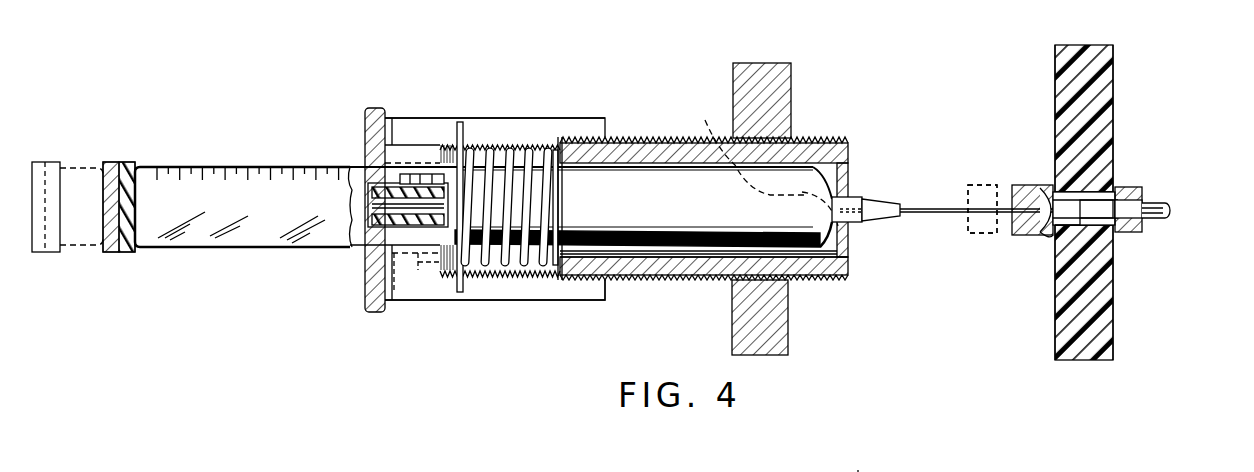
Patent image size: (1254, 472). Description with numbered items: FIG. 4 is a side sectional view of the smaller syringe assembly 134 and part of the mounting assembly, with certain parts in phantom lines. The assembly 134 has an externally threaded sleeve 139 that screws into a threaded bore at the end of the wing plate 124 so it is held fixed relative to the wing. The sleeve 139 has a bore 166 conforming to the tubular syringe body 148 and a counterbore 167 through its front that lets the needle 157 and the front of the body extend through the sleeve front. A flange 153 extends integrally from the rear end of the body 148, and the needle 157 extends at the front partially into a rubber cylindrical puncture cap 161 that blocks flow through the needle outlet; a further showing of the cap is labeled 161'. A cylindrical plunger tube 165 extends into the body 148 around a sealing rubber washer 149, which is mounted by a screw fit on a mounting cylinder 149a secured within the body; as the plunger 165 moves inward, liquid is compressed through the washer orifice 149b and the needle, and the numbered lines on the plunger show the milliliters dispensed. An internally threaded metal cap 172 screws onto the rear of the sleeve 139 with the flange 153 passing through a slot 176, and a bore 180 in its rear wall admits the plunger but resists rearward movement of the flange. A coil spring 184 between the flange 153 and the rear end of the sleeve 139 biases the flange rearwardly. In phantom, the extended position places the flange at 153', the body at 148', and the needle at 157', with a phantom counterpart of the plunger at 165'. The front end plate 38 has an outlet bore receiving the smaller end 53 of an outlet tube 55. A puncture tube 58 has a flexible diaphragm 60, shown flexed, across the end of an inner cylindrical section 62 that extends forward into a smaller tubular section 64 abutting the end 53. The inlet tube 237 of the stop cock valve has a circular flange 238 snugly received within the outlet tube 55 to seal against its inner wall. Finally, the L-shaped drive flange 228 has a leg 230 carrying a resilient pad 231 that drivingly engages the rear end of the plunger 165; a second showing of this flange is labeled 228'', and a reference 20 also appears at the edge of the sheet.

The plunger cap 228'' is at (50, 178).
The L-shaped drive flange 228 is at (139, 219).
The plunger rod (hidden) 165' is at (70, 244).
The flange leg 230 is at (116, 252).
The resilient pad 231 is at (132, 252).
The plunger tube 165 is at (483, 245).
The bore 180 is at (358, 246).
The washer 149 is at (374, 185).
The mounting cylinder 149a is at (416, 186).
The washer orifice 149b is at (354, 170).
The slot 176 is at (425, 128).
The cap 172 is at (443, 120).
The flange 153 is at (479, 171).
The flange in extended position 153' is at (411, 311).
The tubular body 148 is at (506, 170).
The syringe body in extended position 148' is at (611, 218).
The coil spring 184 is at (545, 178).
The externally threaded sleeve 139 is at (698, 276).
The bore 166 is at (790, 258).
The wing plate 124 is at (778, 85).
The syringe assembly 134 is at (513, 318).
The counterbore 167 is at (848, 220).
The needle 157 is at (983, 247).
The needle in extended position 157' is at (801, 197).
The puncture cap 161 is at (971, 175).
The collar alternate position 161' is at (942, 193).
The flexible diaphragm 60 is at (1024, 184).
The puncture tube 58 is at (1048, 186).
The front end plate 38 is at (1105, 100).
The smaller conforming end 53 is at (1100, 233).
The smaller cylindrical tubular section 64 is at (1070, 235).
The inner cylindrical section 62 is at (1046, 234).
The outlet tube 55 is at (1130, 188).
The inlet tube 237 is at (1167, 203).
The circular flange 238 is at (1145, 215).
The apparatus 20 is at (857, 467).